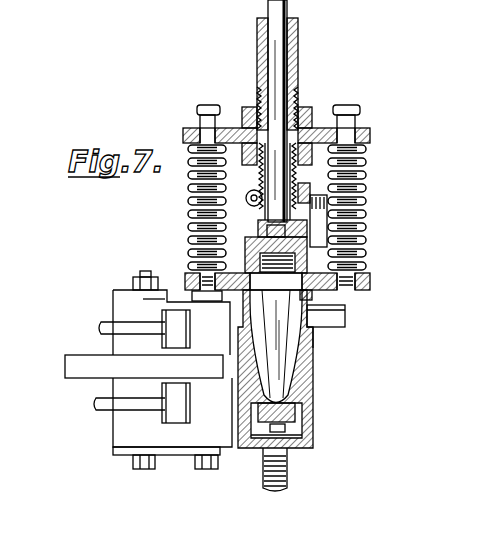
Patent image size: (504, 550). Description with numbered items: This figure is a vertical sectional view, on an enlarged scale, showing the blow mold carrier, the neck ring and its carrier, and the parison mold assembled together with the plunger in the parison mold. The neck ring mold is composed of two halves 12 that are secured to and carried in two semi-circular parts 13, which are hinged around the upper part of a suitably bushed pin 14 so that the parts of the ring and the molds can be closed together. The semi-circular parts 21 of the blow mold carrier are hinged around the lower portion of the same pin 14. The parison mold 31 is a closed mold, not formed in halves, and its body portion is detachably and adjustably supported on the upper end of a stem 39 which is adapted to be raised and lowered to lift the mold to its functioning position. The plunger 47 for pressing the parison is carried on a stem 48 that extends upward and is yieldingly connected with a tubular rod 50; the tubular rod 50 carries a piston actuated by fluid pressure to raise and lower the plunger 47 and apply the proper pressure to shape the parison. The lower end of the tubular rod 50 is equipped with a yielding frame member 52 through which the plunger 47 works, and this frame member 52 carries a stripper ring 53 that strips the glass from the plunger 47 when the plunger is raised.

The neck ring mold half 12 is at (314, 334).
The semi-circular part 13 is at (125, 345).
The bushed pin 14 is at (146, 278).
The semi-circular part of blow mold carrier 21 is at (195, 445).
The parison mold 31 is at (306, 388).
The stem 39 is at (289, 474).
The plunger 47 is at (278, 357).
The stem 48 is at (274, 82).
The tubular rod 50 is at (299, 58).
The yielding frame member 52 is at (372, 280).
The stripper ring 53 is at (346, 316).